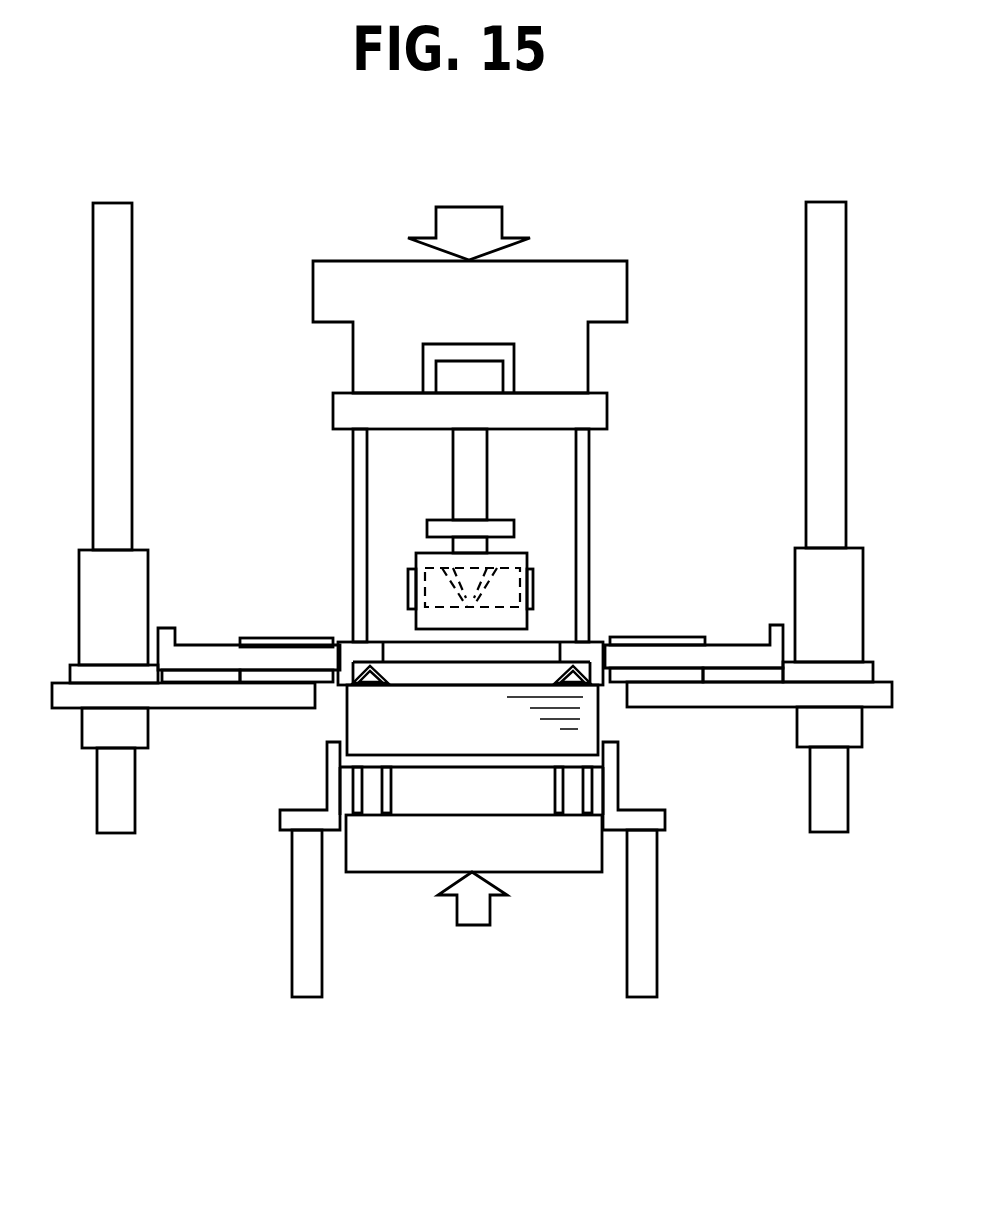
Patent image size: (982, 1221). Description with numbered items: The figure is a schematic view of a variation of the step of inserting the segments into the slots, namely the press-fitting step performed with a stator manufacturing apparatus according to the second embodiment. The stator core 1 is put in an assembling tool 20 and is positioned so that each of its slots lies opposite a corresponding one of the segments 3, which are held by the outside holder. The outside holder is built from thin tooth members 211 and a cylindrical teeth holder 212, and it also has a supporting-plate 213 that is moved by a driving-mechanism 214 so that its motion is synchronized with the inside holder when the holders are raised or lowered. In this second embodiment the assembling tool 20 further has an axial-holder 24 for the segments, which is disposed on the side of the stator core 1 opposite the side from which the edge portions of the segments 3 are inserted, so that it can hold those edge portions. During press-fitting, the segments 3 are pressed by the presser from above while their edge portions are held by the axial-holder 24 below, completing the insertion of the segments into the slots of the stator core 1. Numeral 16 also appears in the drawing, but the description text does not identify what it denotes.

The stator core 1 is at (580, 743).
The segments 3 is at (344, 687).
The die plate 16 is at (582, 650).
The assembling tool 20 is at (330, 542).
The axial-holder 24 is at (395, 853).
The thin tooth members 211 is at (475, 546).
The teeth holder 212 is at (530, 583).
The supporting-plate 213 is at (188, 700).
The driving-mechanism 214 is at (570, 283).